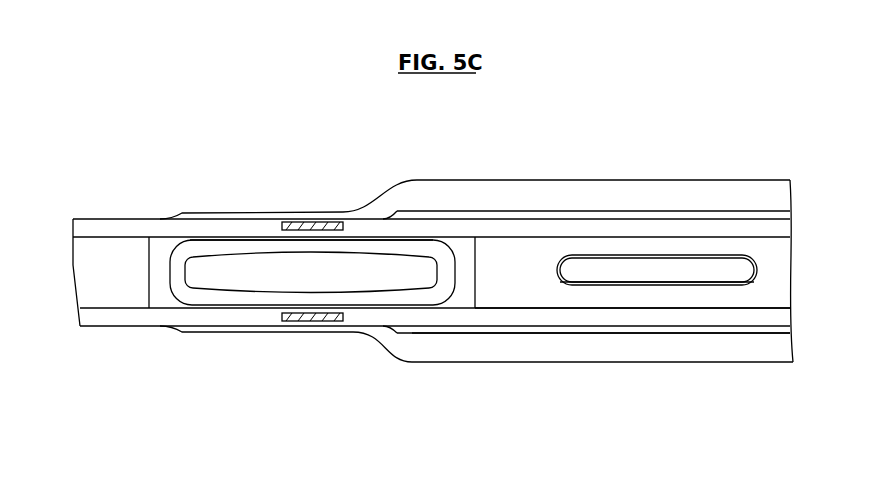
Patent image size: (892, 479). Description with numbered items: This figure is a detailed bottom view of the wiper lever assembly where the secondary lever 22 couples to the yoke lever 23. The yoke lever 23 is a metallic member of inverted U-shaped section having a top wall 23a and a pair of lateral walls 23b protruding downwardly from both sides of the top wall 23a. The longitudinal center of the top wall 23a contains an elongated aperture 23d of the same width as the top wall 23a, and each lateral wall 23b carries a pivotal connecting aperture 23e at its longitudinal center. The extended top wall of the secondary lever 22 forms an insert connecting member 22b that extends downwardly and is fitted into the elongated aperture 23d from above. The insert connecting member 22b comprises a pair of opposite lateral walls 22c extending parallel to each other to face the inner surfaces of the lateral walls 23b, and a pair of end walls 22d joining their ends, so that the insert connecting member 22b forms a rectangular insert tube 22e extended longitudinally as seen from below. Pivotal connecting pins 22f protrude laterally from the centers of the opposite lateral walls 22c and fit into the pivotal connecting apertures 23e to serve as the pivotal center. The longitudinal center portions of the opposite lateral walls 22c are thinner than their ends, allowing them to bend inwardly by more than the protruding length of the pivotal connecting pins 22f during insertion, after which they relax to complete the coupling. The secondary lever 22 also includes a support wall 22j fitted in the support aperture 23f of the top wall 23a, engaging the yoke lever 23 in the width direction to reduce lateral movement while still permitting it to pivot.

The secondary lever 22 is at (720, 180).
The yoke lever 23 is at (100, 218).
The insert connecting member 22b is at (230, 236).
The opposite lateral walls 22c is at (385, 247).
The end walls 22d is at (170, 267).
The rectangular insert tube 22e is at (443, 240).
The pivotal connecting pins 22f is at (307, 221).
The support walls 22j is at (703, 276).
The top wall 23a is at (533, 293).
The lateral walls 23b is at (438, 318).
The elongated aperture 23d is at (228, 303).
The pivotal connecting aperture 23e is at (288, 212).
The support aperture 23f is at (633, 284).